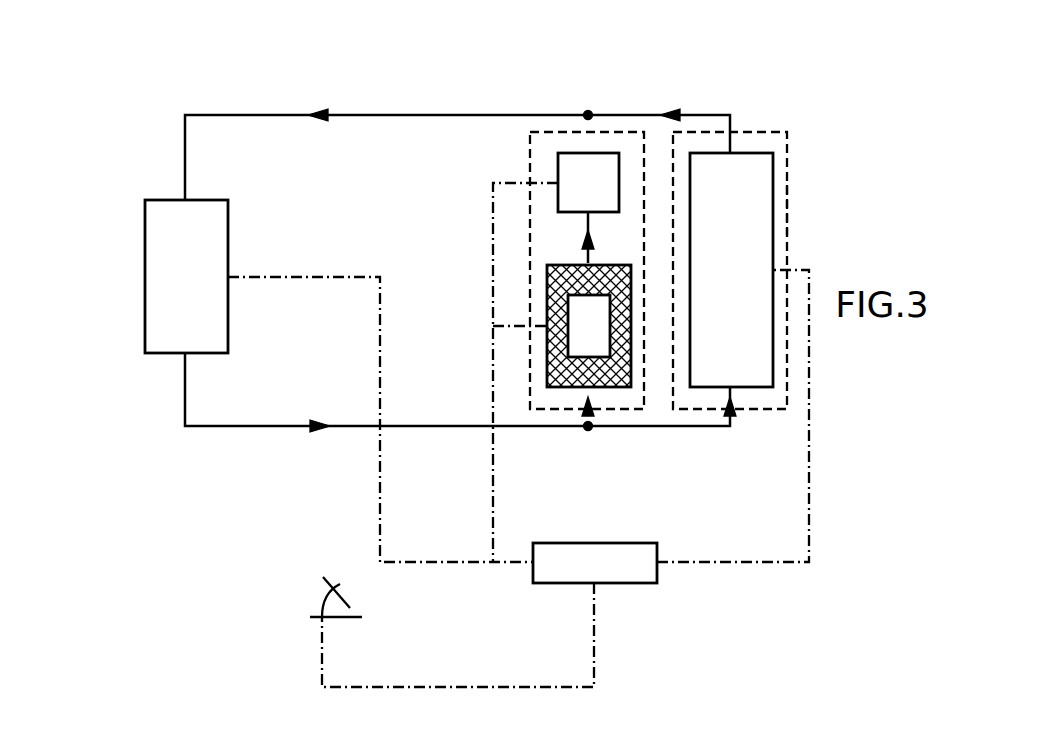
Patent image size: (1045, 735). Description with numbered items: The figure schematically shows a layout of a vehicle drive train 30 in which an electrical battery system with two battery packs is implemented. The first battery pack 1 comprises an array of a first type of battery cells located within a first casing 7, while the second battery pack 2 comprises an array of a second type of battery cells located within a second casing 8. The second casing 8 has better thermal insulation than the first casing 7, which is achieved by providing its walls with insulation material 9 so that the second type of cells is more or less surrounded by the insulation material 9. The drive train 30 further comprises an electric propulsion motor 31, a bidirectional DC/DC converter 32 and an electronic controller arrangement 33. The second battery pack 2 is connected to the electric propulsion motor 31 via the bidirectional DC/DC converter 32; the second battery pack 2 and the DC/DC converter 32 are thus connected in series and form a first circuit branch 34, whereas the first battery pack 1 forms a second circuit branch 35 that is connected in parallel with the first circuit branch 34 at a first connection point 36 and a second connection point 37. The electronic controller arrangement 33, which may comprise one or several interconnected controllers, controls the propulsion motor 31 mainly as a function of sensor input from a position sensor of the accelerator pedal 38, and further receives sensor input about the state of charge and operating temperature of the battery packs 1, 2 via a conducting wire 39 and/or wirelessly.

The vehicle drive train 30 is at (117, 60).
The electric propulsion motor 31 is at (145, 252).
The first battery pack 1 is at (733, 193).
The first casing 7 is at (781, 184).
The second circuit branch 35 is at (789, 211).
The first circuit branch 34 is at (530, 132).
The bidirectional DC/DC converter 32 is at (605, 183).
The first connection point 36 is at (588, 112).
The insulation material 9 is at (558, 357).
The second casing 8 is at (632, 328).
The second battery pack 2 is at (592, 325).
The second connection point 37 is at (588, 430).
The electronic controller arrangement 33 is at (620, 583).
The conducting wire 39 is at (750, 565).
The accelerator pedal 38 is at (330, 592).